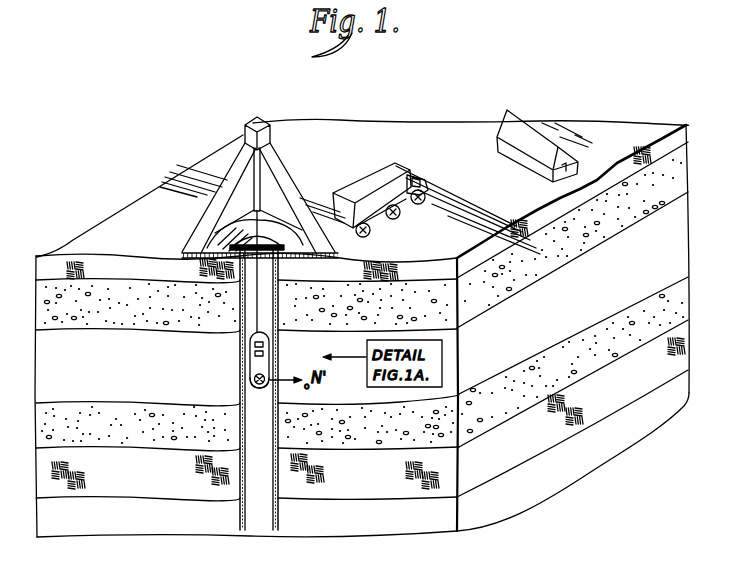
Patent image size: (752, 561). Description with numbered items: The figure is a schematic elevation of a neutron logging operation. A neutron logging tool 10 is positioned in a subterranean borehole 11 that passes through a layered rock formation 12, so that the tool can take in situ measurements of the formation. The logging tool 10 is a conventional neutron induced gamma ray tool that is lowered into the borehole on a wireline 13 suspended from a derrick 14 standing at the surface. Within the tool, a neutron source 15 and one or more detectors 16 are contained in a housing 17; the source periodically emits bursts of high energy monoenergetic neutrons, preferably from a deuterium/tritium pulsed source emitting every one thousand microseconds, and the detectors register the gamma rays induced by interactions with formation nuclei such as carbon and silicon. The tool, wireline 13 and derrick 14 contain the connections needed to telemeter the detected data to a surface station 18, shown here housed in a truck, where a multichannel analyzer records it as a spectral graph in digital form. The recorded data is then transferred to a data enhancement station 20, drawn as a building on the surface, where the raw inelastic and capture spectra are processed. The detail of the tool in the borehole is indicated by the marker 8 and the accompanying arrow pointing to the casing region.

The well bore 8 is at (281, 340).
The neutron logging tool 10 is at (243, 362).
The subterranean borehole 11 is at (240, 513).
The rock formation 12 is at (123, 311).
The wireline 13 is at (282, 277).
The derrick 14 is at (213, 208).
The neutron source 15 is at (252, 383).
The detectors 16 is at (253, 344).
The housing 17 is at (253, 374).
The surface station 18 is at (370, 173).
The data enhancement station 20 is at (536, 148).